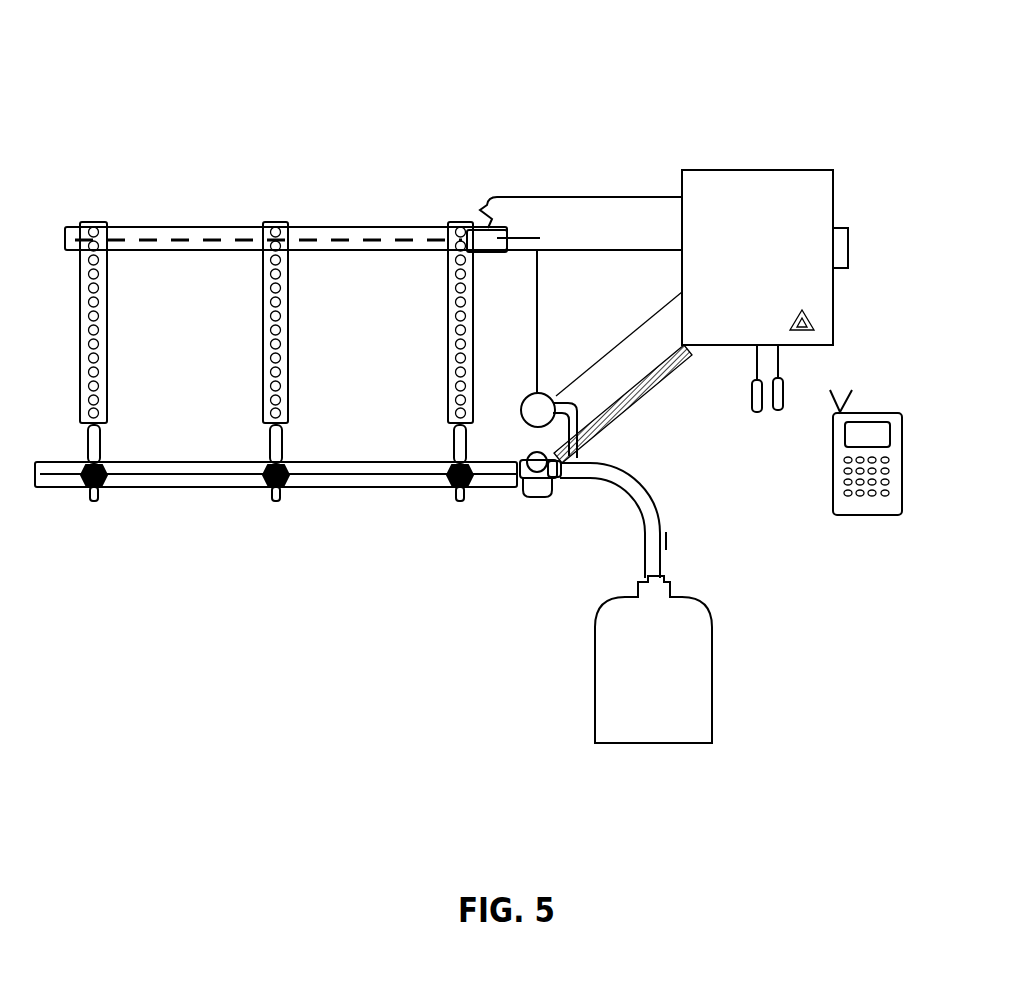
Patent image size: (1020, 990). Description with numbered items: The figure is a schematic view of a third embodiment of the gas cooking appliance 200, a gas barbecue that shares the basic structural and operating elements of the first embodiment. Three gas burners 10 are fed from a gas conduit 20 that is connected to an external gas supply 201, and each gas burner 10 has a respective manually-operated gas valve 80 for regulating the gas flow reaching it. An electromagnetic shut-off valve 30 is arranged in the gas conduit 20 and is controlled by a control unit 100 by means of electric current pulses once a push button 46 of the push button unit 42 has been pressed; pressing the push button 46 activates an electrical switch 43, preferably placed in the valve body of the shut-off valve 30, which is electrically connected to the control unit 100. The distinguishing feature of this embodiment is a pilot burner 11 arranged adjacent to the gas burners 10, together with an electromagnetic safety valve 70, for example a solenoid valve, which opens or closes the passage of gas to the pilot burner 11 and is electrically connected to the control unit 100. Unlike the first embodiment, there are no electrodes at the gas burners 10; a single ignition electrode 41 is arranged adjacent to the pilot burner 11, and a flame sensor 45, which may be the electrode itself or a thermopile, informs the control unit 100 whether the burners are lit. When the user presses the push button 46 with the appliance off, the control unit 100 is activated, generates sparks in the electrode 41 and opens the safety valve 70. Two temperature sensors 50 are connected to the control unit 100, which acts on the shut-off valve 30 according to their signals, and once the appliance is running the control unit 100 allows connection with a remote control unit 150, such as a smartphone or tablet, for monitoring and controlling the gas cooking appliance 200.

The gas cooking appliance 200 is at (205, 75).
The pilot burner 11 is at (235, 230).
The gas burner 10 is at (80, 330).
The gas valve 80 is at (88, 440).
The gas conduit 20 is at (235, 487).
The ignition electrode 41 is at (483, 205).
The flame sensor 45 is at (483, 255).
The electromagnetic safety valve 70 is at (532, 395).
The electromagnetic shut-off valve 30 is at (533, 450).
The electrical switch 43 is at (550, 467).
The push button 46 is at (538, 495).
The push button unit 42 is at (528, 512).
The external gas supply 201 is at (717, 643).
The control unit 100 is at (750, 175).
The temperature sensor 50 is at (782, 403).
The remote control unit 150 is at (872, 395).